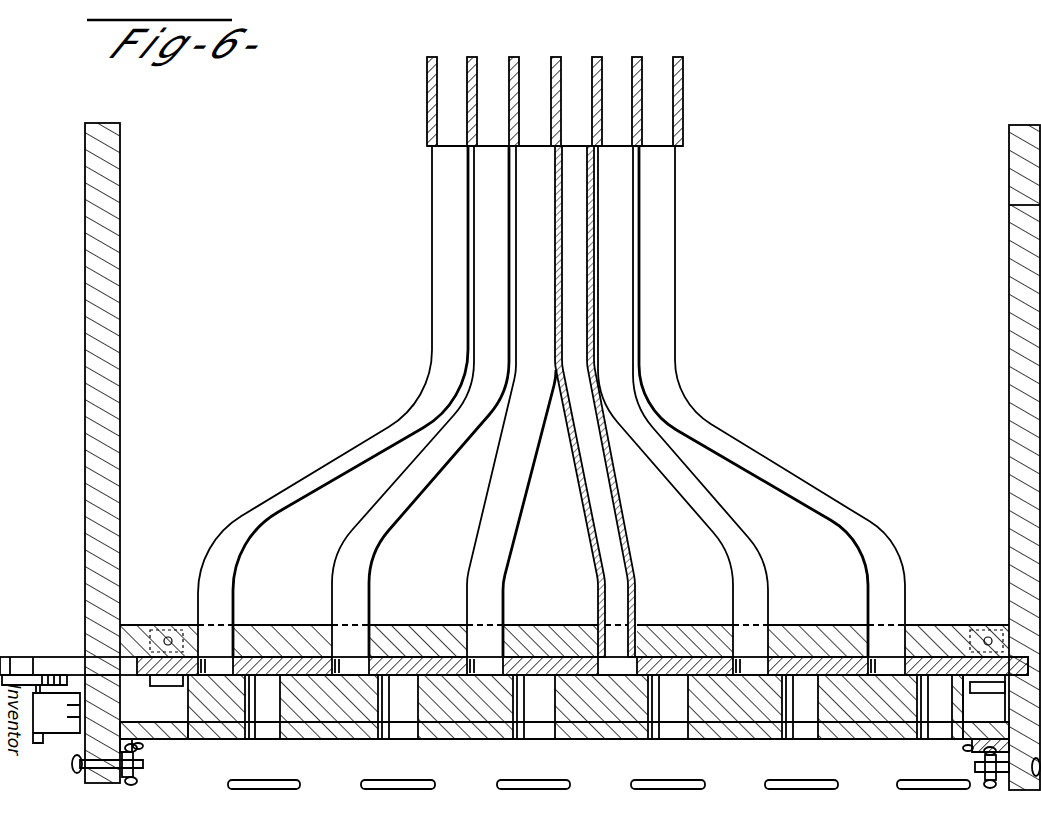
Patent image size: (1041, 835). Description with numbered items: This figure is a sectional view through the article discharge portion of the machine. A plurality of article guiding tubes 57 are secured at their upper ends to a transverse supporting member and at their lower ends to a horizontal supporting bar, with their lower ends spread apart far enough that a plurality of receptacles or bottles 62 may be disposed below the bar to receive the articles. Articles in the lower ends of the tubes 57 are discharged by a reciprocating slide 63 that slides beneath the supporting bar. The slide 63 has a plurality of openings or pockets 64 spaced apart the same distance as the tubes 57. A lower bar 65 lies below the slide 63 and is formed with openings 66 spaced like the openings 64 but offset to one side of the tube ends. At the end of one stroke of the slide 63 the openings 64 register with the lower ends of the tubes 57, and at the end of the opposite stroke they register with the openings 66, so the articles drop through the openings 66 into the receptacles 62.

The article guiding tubes 57 is at (678, 362).
The receptacles or bottles 62 is at (378, 779).
The reciprocating slide 63 is at (938, 667).
The openings or pockets 64 is at (795, 656).
The lower bar 65 is at (478, 712).
The openings 66 is at (538, 731).